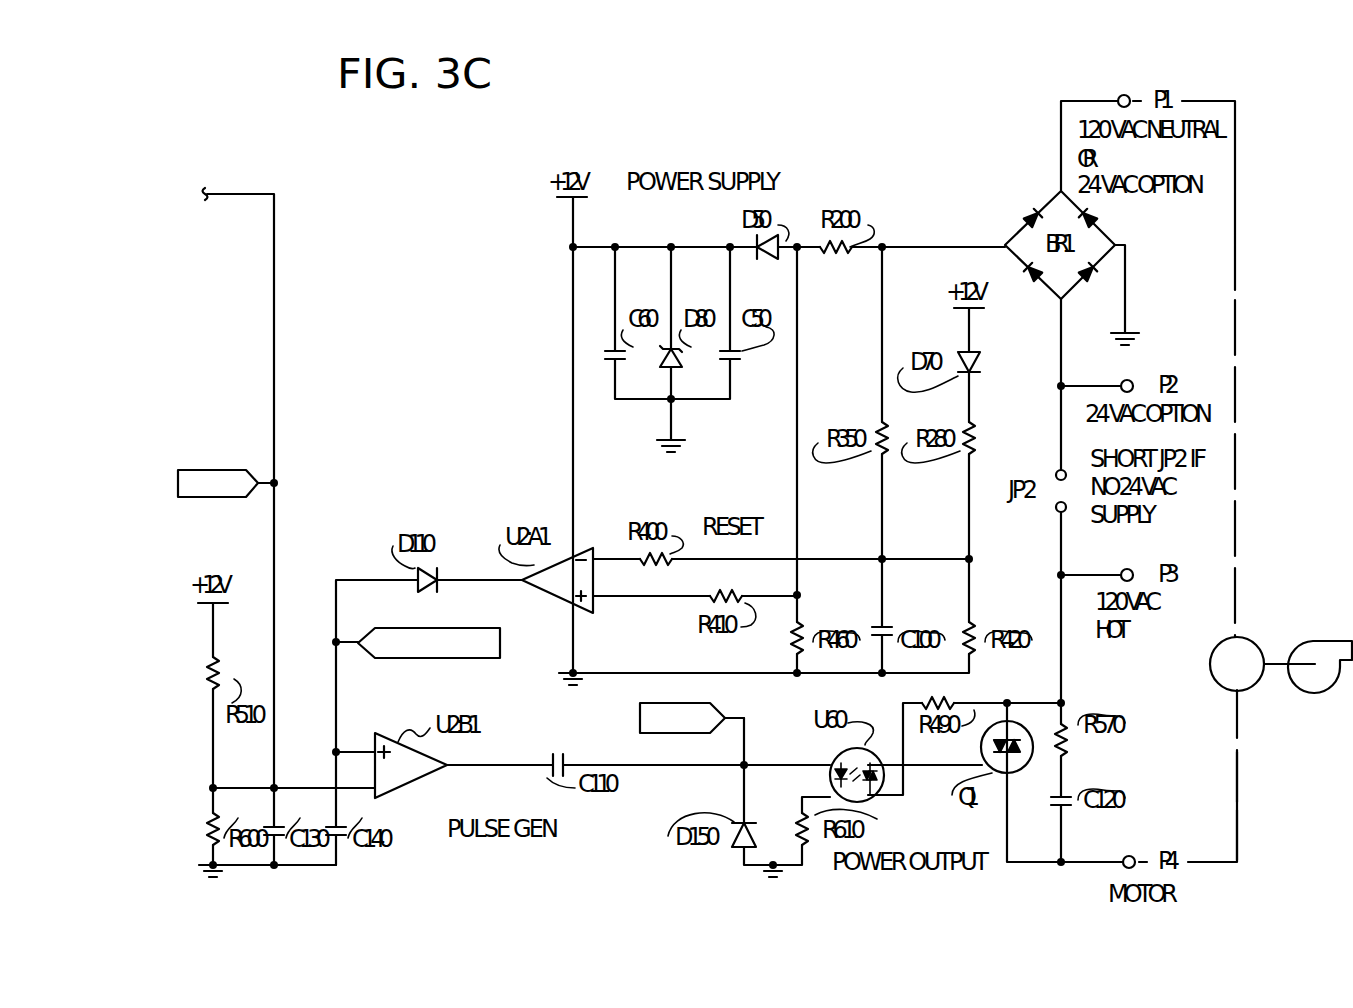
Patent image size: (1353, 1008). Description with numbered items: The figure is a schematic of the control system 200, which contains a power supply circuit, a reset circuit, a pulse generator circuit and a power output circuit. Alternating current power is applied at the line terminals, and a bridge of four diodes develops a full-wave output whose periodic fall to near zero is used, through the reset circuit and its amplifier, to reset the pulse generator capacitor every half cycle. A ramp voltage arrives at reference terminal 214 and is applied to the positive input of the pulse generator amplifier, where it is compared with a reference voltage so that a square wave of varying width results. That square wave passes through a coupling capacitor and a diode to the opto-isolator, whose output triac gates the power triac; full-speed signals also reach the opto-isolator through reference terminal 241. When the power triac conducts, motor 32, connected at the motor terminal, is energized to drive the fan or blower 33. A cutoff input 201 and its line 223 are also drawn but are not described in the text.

The control system 200 is at (958, 140).
The cutoff signal 201 is at (225, 470).
The reference terminal 214 is at (452, 660).
The cutoff line 223 is at (276, 350).
The reference terminal 241 is at (640, 721).
The motor 32 is at (1255, 690).
The fan or blower 33 is at (1312, 640).